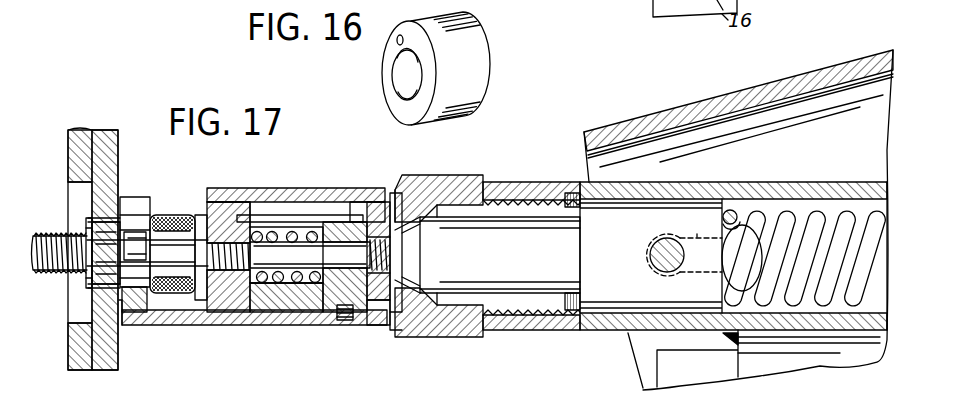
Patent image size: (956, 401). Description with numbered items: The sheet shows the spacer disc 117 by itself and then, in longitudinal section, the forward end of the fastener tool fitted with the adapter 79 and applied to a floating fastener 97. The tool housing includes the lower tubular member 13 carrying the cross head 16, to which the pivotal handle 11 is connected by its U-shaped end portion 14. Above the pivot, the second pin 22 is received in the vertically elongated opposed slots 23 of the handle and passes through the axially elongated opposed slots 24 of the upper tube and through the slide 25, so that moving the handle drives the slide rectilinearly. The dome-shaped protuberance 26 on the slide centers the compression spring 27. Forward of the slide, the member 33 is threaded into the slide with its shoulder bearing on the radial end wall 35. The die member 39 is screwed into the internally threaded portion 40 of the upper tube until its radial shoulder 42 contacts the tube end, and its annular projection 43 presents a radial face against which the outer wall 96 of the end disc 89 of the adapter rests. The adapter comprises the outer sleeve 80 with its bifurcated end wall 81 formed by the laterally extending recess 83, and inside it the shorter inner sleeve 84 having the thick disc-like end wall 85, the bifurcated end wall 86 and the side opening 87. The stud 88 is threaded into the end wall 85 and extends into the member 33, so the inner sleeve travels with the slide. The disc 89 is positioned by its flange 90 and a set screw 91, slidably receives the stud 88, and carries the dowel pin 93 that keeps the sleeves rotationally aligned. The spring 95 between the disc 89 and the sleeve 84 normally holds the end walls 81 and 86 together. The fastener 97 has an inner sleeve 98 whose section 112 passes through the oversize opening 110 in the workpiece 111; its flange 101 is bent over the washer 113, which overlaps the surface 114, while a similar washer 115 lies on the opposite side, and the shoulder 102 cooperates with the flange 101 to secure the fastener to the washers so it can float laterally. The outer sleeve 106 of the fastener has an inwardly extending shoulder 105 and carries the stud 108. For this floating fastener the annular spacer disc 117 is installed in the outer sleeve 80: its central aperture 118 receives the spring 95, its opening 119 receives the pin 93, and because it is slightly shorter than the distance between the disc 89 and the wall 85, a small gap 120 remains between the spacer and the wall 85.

In FIG. 17, the pivotal handle 11 is at (768, 86).
In FIG. 17, the lower tubular member 13 is at (850, 358).
In FIG. 17, the U-shaped end portion 14 is at (587, 170).
In FIG. 17, the cross head 16 is at (718, 376).
In FIG. 17, the second pin 22 is at (651, 258).
In FIG. 17, the opposed slots 23 is at (652, 240).
In FIG. 17, the opposed slots 24 is at (697, 236).
In FIG. 17, the slide 25 is at (616, 318).
In FIG. 17, the dome-shaped protuberance 26 is at (725, 302).
In FIG. 17, the compression spring 27 is at (862, 190).
In FIG. 17, the member 33 is at (527, 220).
In FIG. 17, the radial end wall 35 is at (570, 312).
In FIG. 17, the die member 39 is at (450, 173).
In FIG. 17, the internally threaded portion 40 is at (492, 332).
In FIG. 17, the radial shoulder 42 is at (490, 181).
In FIG. 17, the annular projection 43 is at (400, 190).
In FIG. 17, the adapter 79 is at (362, 186).
In FIG. 17, the outer sleeve 80 is at (248, 215).
In FIG. 17, the end wall 81 is at (125, 323).
In FIG. 17, the laterally extending recess 83 is at (132, 228).
In FIG. 17, the inner sleeve 84 is at (228, 318).
In FIG. 17, the disc-like end wall 85 is at (262, 300).
In FIG. 17, the end wall 86 is at (135, 298).
In FIG. 17, the opening 87 is at (200, 253).
In FIG. 17, the stud 88 is at (287, 268).
In FIG. 17, the disc 89 is at (375, 300).
In FIG. 17, the flange 90 is at (385, 320).
In FIG. 17, the set screw 91 is at (345, 322).
In FIG. 17, the dowel pin 93 is at (358, 217).
In FIG. 17, the spring 95 is at (285, 232).
In FIG. 17, the outer wall 96 is at (398, 330).
In FIG. 17, the fastener 97 is at (200, 203).
In FIG. 17, the inner sleeve 98 is at (143, 240).
In FIG. 17, the flange 101 is at (87, 232).
In FIG. 17, the shoulder 102 is at (150, 246).
In FIG. 17, the inwardly extending shoulder 105 is at (150, 257).
In FIG. 17, the outer sleeve 106 is at (178, 217).
In FIG. 17, the stud 108 is at (36, 262).
In FIG. 17, the opening 110 is at (92, 284).
In FIG. 17, the workpiece 111 is at (90, 368).
In FIG. 17, the section 112 is at (106, 230).
In FIG. 17, the washer 113 is at (88, 218).
In FIG. 17, the surface 114 is at (90, 318).
In FIG. 17, the washer 115 is at (150, 225).
In FIG. 16, the spacer disc 117 is at (494, 56).
In FIG. 17, the spacer disc 117 is at (338, 300).
In FIG. 16, the central aperture 118 is at (405, 80).
In FIG. 17, the central aperture 118 is at (292, 240).
In FIG. 16, the opening 119 is at (397, 41).
In FIG. 17, the opening 119 is at (272, 232).
In FIG. 17, the gap 120 is at (255, 312).